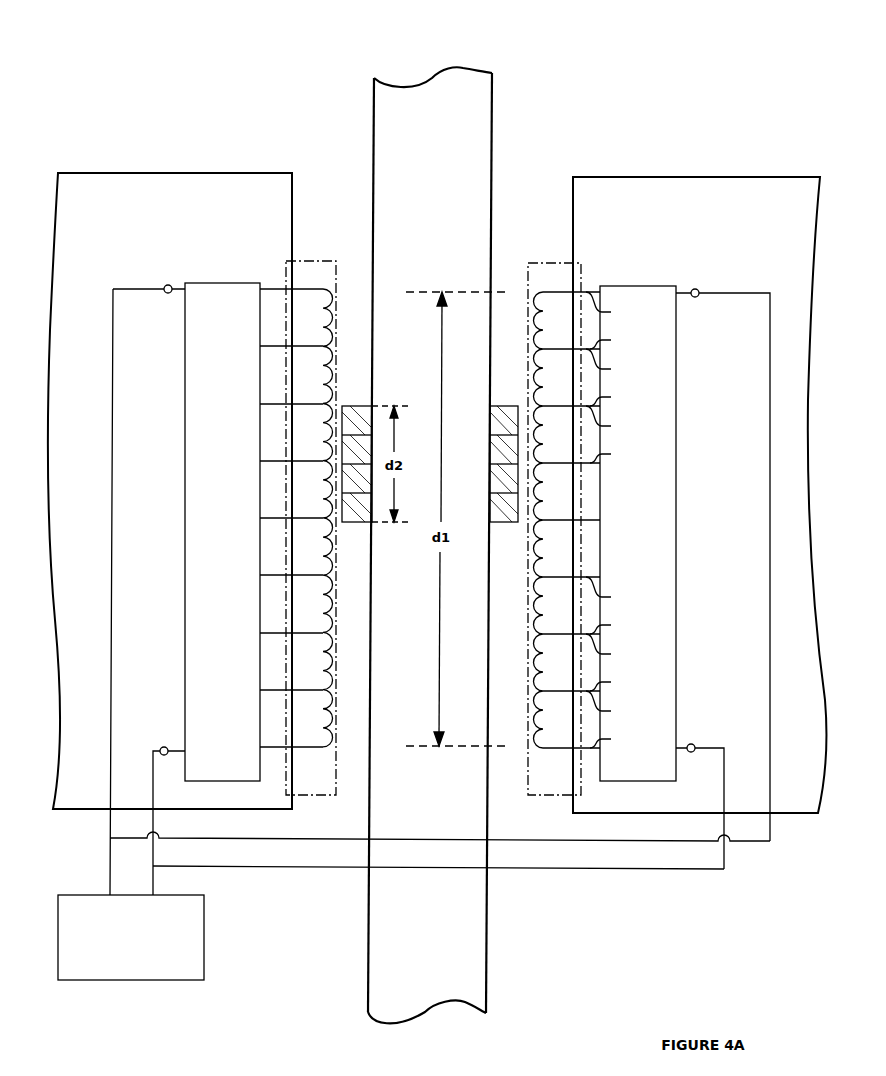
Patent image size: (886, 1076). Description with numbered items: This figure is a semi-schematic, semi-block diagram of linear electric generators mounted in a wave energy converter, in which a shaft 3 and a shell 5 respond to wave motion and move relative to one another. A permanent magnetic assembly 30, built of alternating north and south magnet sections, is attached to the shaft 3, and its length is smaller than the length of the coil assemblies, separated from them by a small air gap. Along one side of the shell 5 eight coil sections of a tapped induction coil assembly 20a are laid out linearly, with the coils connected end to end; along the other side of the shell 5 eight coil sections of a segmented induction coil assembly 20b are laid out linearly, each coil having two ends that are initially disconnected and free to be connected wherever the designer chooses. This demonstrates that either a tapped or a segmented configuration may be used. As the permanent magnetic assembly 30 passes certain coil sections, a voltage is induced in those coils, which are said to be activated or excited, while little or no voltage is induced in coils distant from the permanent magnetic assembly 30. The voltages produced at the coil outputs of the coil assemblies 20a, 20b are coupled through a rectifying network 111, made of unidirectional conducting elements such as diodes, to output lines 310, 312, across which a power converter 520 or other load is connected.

The shaft 3 is at (427, 88).
The shell 5 is at (233, 173).
The tapped induction coil assembly 20a is at (308, 260).
The segmented induction coil assembly 20b is at (557, 263).
The permanent magnetic assembly 30 is at (355, 406).
The rectifying network 111 is at (207, 283).
The output line 310 is at (108, 865).
The output line 312 is at (323, 867).
The power converter 520 is at (85, 895).